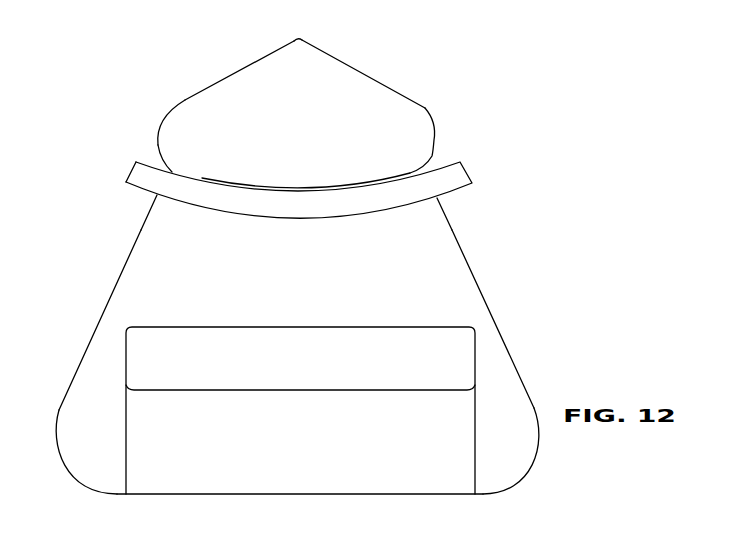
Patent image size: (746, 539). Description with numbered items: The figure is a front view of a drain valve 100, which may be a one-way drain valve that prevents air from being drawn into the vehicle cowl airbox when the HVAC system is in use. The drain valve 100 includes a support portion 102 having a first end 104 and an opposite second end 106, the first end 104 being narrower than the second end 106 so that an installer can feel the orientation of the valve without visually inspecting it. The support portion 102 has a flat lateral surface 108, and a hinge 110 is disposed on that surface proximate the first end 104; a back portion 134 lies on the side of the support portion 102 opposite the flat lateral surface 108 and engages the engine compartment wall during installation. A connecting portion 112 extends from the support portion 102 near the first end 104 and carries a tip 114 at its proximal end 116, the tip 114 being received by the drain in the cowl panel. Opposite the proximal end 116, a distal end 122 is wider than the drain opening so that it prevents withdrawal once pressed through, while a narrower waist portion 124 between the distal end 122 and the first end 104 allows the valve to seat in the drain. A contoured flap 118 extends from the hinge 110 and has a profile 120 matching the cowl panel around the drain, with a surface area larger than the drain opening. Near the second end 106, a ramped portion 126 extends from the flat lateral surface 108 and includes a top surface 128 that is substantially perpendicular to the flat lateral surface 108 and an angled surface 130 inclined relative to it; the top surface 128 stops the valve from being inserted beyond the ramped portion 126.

The drain valve 100 is at (87, 101).
The support portion 102 is at (118, 277).
The first end 104 is at (153, 196).
The second end 106 is at (62, 398).
The flat lateral surface 108 is at (445, 285).
The hinge 110 is at (433, 165).
The connecting portion 112 is at (405, 78).
The tip 114 is at (294, 35).
The proximal end 116 is at (263, 54).
The contoured flap 118 is at (138, 150).
The profile 120 is at (416, 155).
The distal end 122 is at (182, 97).
The waist portion 124 is at (166, 170).
The ramped portion 126 is at (483, 352).
The top surface 128 is at (460, 320).
The angled surface 130 is at (405, 474).
The back portion 134 is at (462, 225).